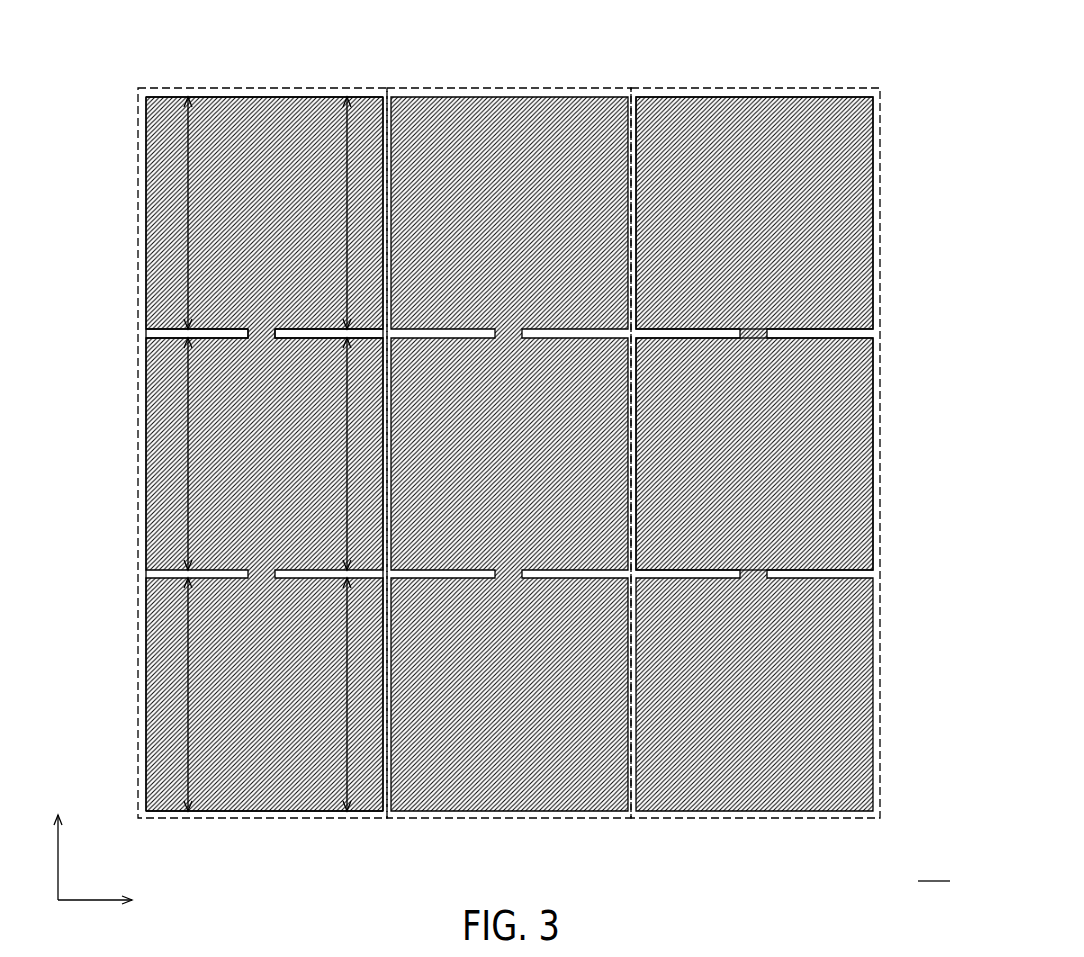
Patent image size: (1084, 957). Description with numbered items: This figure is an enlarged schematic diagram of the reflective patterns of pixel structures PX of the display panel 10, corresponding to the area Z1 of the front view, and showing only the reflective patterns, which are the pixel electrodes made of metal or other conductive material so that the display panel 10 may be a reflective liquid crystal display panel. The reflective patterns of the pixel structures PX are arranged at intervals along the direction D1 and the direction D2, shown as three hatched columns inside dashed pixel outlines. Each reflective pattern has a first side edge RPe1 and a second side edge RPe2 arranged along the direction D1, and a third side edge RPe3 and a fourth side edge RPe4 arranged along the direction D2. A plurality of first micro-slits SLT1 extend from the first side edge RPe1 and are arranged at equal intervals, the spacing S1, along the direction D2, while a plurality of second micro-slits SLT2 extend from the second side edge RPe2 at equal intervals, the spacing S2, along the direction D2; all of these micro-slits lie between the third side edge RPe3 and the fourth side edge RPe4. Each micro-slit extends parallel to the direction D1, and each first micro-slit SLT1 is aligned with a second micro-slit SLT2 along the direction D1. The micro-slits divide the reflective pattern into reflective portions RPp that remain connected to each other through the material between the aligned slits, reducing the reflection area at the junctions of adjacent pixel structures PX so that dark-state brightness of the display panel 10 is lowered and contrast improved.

The display panel 10 is at (934, 863).
The pixel structure PX is at (581, 88).
The area Z1 is at (720, 87).
The reflective portion RPp is at (843, 283).
The first side edge RPe1 is at (145, 195).
The second side edge RPe2 is at (383, 158).
The third side edge RPe3 is at (270, 97).
The fourth side edge RPe4 is at (252, 812).
The first micro-slit SLT1 is at (185, 332).
The second micro-slit SLT2 is at (312, 333).
The spacing S1 is at (187, 242).
The spacing S2 is at (347, 135).
The direction D1 is at (112, 902).
The direction D2 is at (61, 844).